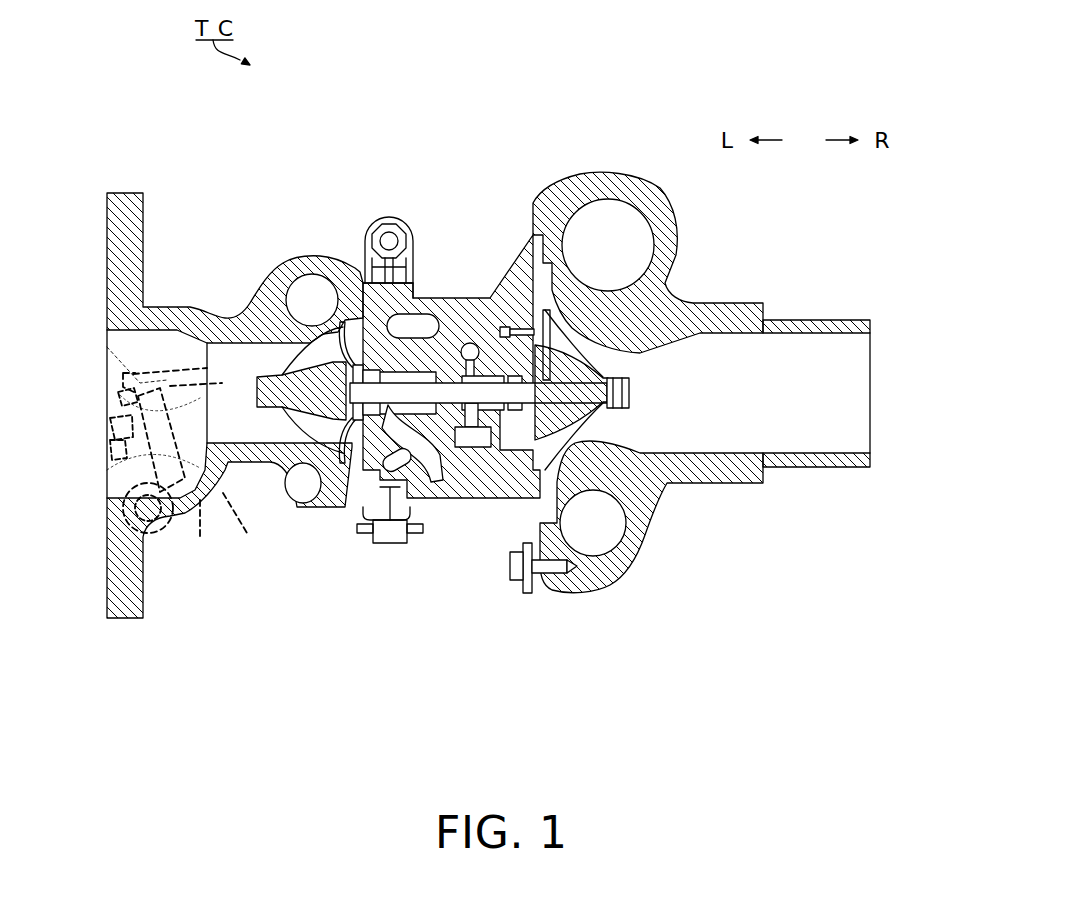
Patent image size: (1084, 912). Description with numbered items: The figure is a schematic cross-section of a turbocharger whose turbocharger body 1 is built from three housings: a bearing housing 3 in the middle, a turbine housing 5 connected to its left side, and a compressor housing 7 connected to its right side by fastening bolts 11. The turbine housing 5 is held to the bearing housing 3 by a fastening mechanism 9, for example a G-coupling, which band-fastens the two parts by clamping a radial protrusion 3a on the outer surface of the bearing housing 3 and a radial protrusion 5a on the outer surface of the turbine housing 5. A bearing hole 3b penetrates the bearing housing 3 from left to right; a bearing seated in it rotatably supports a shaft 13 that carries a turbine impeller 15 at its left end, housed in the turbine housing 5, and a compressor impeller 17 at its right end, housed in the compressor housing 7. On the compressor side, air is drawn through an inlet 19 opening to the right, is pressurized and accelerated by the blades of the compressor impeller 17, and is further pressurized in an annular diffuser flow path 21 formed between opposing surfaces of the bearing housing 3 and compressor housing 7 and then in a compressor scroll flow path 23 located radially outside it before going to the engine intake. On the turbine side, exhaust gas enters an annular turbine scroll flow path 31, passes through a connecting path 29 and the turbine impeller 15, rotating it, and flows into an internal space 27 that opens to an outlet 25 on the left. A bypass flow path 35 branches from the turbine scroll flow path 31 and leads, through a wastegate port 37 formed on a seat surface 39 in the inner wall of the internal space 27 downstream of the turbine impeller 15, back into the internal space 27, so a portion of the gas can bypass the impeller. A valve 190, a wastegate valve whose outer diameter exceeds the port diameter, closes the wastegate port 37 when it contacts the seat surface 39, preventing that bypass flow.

The turbocharger body 1 is at (300, 113).
The bearing housing 3 is at (446, 374).
The protrusion 3a is at (413, 258).
The bearing hole 3b is at (432, 413).
The turbine housing 5 is at (235, 405).
The protrusion 5a is at (362, 262).
The compressor housing 7 is at (740, 345).
The fastening mechanism 9 is at (385, 204).
The fastening bolts 11 is at (522, 585).
The shaft 13 is at (437, 413).
The turbine impeller 15 is at (257, 380).
The compressor impeller 17 is at (600, 440).
The inlet 19 is at (873, 427).
The diffuser flow path 21 is at (537, 290).
The compressor scroll flow path 23 is at (612, 525).
The outlet 25 is at (107, 388).
The internal space 27 is at (138, 359).
The connecting path 29 is at (283, 290).
The turbine scroll flow path 31 is at (294, 298).
The bypass flow path 35 is at (107, 340).
The wastegate port 37 is at (112, 430).
The seat surface 39 is at (133, 398).
The valve 190 is at (118, 490).